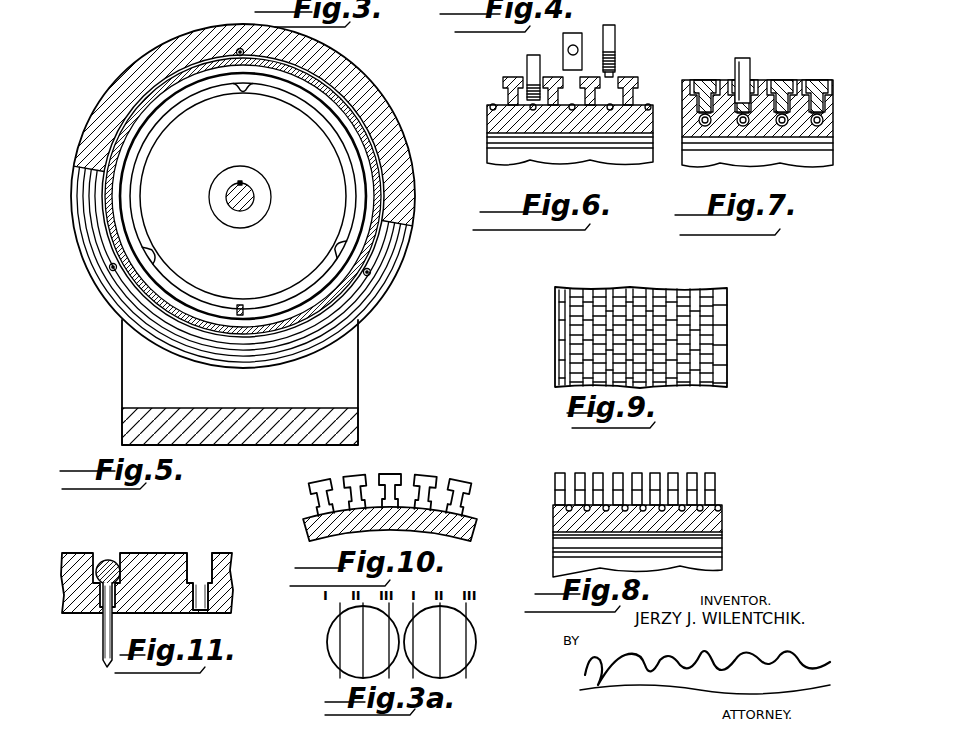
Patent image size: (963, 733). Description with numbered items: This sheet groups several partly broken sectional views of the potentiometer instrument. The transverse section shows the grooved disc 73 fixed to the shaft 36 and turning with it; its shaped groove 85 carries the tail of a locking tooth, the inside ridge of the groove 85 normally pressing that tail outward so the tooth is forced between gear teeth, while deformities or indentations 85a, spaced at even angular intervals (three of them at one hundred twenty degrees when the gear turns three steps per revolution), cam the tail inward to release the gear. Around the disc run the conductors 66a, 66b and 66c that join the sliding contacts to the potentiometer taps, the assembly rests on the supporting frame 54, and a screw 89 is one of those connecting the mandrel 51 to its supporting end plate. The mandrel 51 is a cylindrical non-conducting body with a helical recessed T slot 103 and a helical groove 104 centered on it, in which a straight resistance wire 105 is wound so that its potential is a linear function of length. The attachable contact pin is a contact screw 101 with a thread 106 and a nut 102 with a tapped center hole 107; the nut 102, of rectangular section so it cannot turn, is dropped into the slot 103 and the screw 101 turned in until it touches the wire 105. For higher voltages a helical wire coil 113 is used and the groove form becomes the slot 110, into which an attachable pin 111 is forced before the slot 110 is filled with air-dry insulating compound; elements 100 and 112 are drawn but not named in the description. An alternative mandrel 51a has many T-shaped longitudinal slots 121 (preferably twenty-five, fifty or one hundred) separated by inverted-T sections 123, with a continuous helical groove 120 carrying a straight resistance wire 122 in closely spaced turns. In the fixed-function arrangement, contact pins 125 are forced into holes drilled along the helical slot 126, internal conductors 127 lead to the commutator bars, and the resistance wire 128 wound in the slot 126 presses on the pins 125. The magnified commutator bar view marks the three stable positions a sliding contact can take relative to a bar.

In FIG. 5, the shaft 36 is at (251, 194).
In FIG. 6, the mandrel 51 is at (490, 118).
In FIG. 8, the mandrel 51a is at (560, 517).
In FIG. 5, the supporting frame 54 is at (208, 412).
In FIG. 5, the conductor 66a is at (240, 50).
In FIG. 5, the conductor 66b is at (370, 274).
In FIG. 5, the conductor 66c is at (110, 268).
In FIG. 5, the grooved disc 73 is at (226, 281).
In FIG. 5, the shaped groove 85 is at (343, 148).
In FIG. 5, the indentations 85a is at (247, 92).
In FIG. 5, the screw 89 is at (242, 310).
In FIG. 6, the pole piece 100 is at (612, 86).
In FIG. 6, the contact screw 101 is at (531, 70).
In FIG. 6, the nut 102 is at (564, 42).
In FIG. 6, the helical recessed T slot 103 is at (634, 100).
In FIG. 6, the helical groove 104 is at (494, 100).
In FIG. 6, the resistance wire 105 is at (491, 106).
In FIG. 7, the thread 106 is at (752, 99).
In FIG. 6, the tapped center hole 107 is at (578, 45).
In FIG. 7, the slot 110 is at (783, 84).
In FIG. 7, the attachable pin 111 is at (752, 62).
In FIG. 7, the slot 112 is at (703, 79).
In FIG. 7, the helical wire coil 113 is at (680, 128).
In FIG. 9, the helical groove 120 is at (662, 305).
In FIG. 8, the helical groove 120 is at (700, 485).
In FIG. 9, the longitudinal slots 121 is at (578, 300).
In FIG. 8, the longitudinal slots 121 is at (714, 497).
In FIG. 10, the longitudinal slots 121 is at (448, 490).
In FIG. 8, the resistance wire 122 is at (722, 512).
In FIG. 10, the section 123 is at (463, 491).
In FIG. 11, the contact pins 125 is at (92, 615).
In FIG. 11, the helical slot 126 is at (200, 578).
In FIG. 11, the conductors 127 is at (103, 652).
In FIG. 11, the resistance wire 128 is at (112, 560).